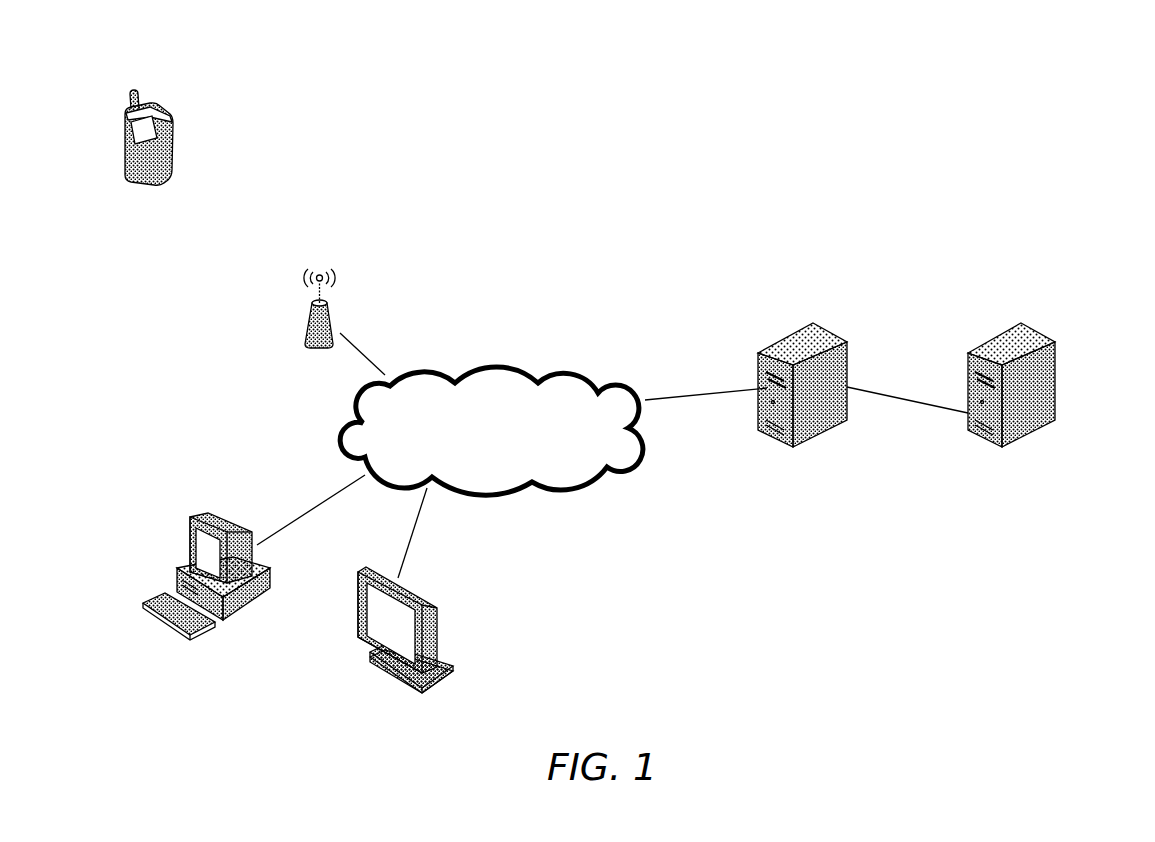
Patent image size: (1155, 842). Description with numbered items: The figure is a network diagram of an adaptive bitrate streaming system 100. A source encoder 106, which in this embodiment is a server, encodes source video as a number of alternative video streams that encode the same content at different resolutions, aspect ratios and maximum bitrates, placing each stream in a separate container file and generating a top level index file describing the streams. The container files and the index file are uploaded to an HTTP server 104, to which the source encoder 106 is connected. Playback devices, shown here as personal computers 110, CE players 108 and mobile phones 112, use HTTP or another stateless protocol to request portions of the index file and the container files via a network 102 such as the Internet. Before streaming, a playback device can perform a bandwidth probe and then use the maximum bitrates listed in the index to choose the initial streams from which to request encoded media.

The streaming system 100 is at (630, 225).
The network 102 is at (525, 487).
The HTTP server 104 is at (827, 330).
The source encoder 106 is at (1028, 325).
The CE player 108 is at (367, 647).
The personal computer 110 is at (172, 627).
The mobile phone 112 is at (162, 117).